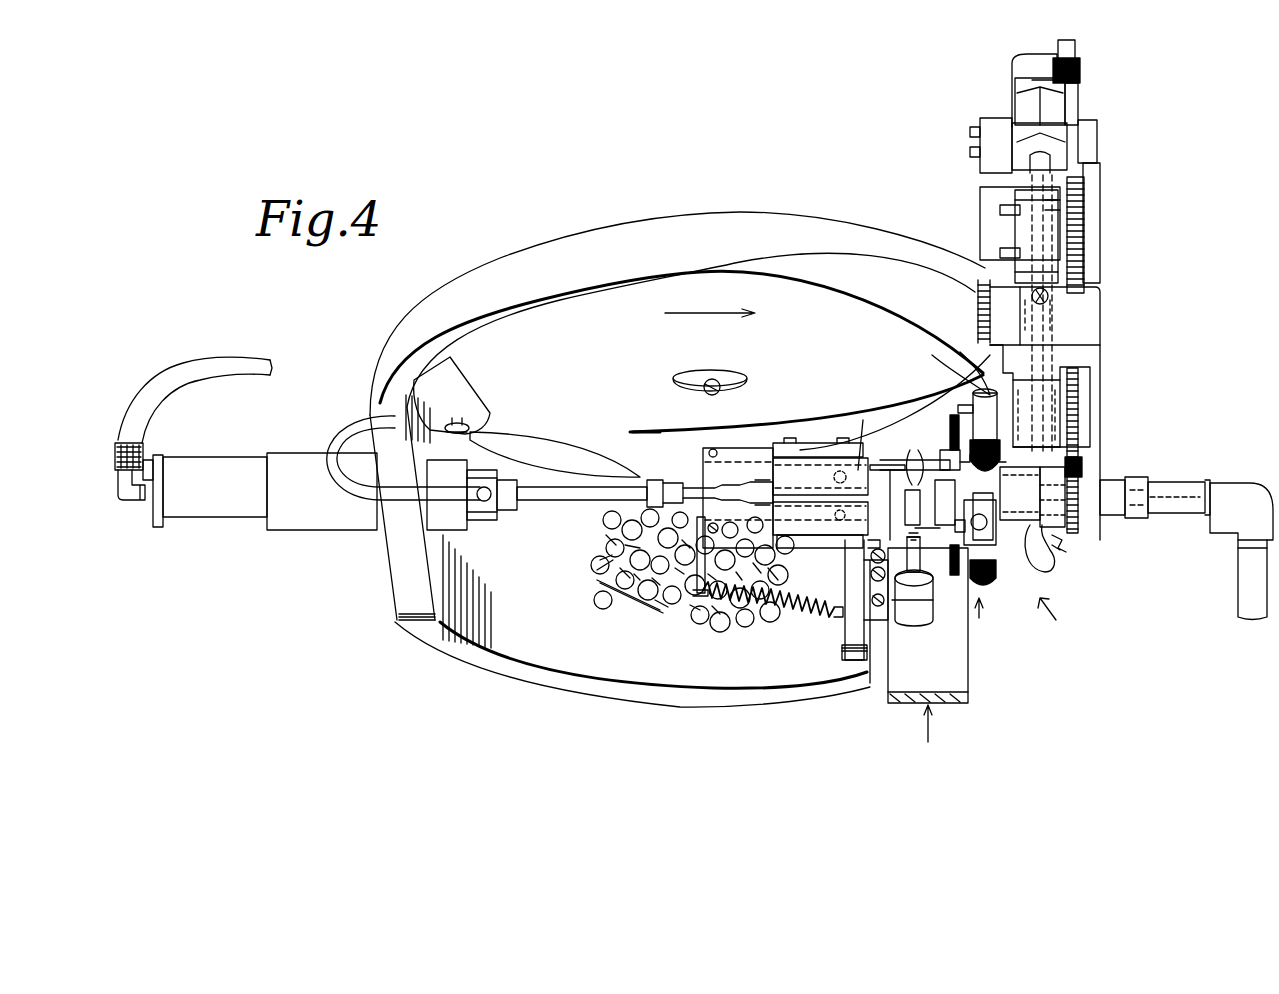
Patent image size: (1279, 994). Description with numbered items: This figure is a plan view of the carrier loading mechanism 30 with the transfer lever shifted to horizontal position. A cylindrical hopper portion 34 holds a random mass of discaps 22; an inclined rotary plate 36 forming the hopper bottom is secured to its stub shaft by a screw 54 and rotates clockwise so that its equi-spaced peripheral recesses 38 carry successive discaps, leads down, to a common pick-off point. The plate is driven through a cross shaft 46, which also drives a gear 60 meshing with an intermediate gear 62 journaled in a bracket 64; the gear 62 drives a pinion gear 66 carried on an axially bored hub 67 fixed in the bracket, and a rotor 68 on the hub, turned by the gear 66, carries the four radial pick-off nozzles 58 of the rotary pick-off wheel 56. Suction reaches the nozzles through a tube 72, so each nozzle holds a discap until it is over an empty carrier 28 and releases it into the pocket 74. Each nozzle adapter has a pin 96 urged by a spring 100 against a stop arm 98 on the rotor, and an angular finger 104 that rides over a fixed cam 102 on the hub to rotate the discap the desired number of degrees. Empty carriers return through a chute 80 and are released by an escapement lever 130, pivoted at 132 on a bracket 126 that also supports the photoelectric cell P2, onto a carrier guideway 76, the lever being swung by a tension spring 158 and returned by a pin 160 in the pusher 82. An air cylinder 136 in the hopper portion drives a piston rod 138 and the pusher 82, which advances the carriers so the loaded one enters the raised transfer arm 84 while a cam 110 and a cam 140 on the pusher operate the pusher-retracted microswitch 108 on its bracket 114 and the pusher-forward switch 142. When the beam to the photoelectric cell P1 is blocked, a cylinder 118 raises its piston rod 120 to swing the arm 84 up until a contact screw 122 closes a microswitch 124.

The discap 22 is at (686, 570).
The carrier 28 is at (940, 452).
The carrier loading mechanism 30 is at (1059, 619).
The hopper portion 34 is at (395, 562).
The rotary plate 36 is at (715, 343).
The recess 38 is at (472, 392).
The cross shaft 46 is at (1020, 270).
The screw 54 is at (710, 394).
The rotary pick-off wheel 56 is at (985, 625).
The pick-off nozzle 58 is at (1000, 460).
The gear 60 is at (1086, 192).
The intermediate gear 62 is at (1080, 392).
The bracket 64 is at (1097, 426).
The pinion gear 66 is at (1078, 530).
The hub 67 is at (1045, 568).
The rotor 68 is at (1000, 508).
The tube 72 is at (1240, 583).
The pocket 74 is at (910, 470).
The carrier guideway 76 is at (700, 430).
The chute 80 is at (968, 690).
The pusher 82 is at (720, 478).
The transfer arm 84 is at (1032, 362).
The pin 96 is at (960, 452).
The stop arm 98 is at (967, 552).
The spring 100 is at (966, 412).
The cam 102 is at (935, 518).
The angular finger 104 is at (923, 505).
The pusher-retracted microswitch 108 is at (820, 522).
The cam 110 is at (760, 511).
The bracket 114 is at (860, 555).
The cylinder 118 is at (1012, 68).
The piston rod 120 is at (1052, 180).
The contact screw 122 is at (1050, 300).
The microswitch 124 is at (1060, 220).
The bracket 126 is at (903, 622).
The escapement lever 130 is at (845, 642).
The pivot 132 is at (868, 556).
The air cylinder 136 is at (220, 464).
The piston rod 138 is at (548, 508).
The cam 140 is at (895, 412).
The pusher-forward switch 142 is at (785, 473).
The tension spring 158 is at (773, 611).
The pin 160 is at (820, 477).
The photoelectric cell P1 is at (1065, 548).
The photoelectric cell P2 is at (915, 625).